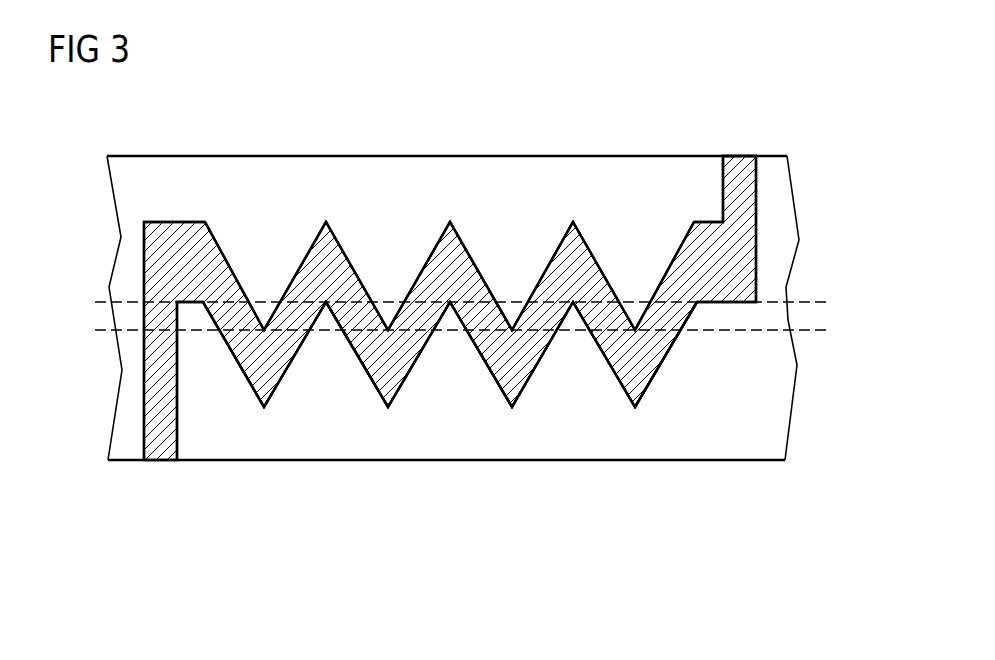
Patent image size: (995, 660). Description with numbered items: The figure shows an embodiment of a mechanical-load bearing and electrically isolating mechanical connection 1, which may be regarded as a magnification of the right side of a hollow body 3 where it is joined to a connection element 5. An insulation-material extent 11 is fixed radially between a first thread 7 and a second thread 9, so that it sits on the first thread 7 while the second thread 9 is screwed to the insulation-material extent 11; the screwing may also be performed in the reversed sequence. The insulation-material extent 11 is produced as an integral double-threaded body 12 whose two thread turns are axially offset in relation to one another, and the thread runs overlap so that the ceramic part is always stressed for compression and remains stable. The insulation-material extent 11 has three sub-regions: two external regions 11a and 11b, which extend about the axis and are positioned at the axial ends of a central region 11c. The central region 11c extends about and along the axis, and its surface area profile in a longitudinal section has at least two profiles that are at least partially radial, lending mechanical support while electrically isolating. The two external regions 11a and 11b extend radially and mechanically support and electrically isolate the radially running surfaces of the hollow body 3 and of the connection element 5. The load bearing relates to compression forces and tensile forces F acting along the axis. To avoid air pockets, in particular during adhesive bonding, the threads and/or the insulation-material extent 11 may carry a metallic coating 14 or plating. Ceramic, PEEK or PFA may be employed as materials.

The mechanical connection 1 is at (638, 88).
The hollow body 3 is at (522, 165).
The connection element 5 is at (733, 452).
The first thread 7 is at (395, 258).
The second thread 9 is at (573, 366).
The insulation-material extent 11 is at (742, 162).
The external region 11a is at (145, 401).
The external region 11b is at (756, 199).
The central region 11c is at (695, 468).
The double-threaded body 12 is at (381, 370).
The metallic coating 14 is at (658, 370).
The compression forces and tensile forces F is at (828, 302).